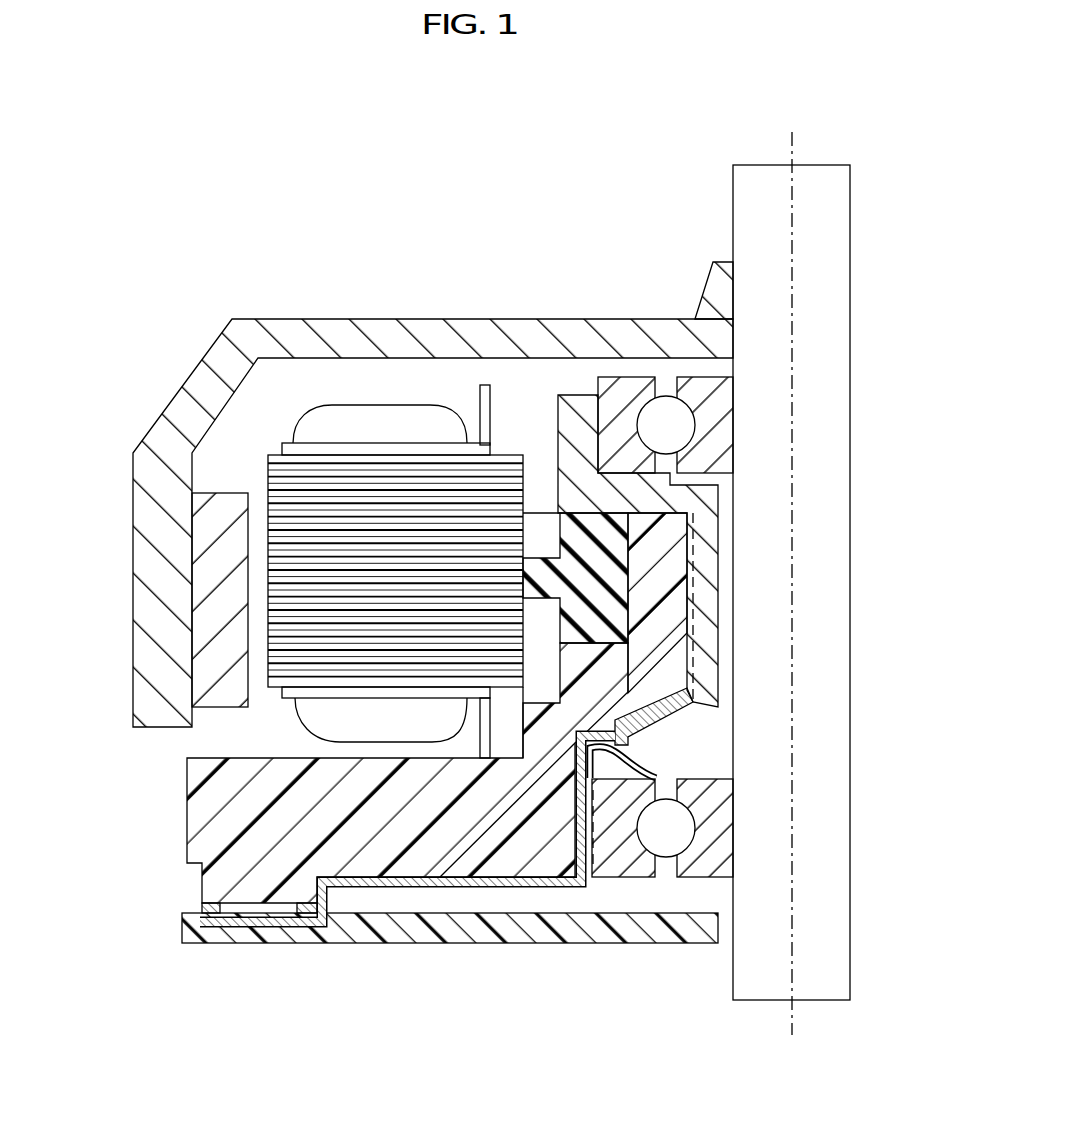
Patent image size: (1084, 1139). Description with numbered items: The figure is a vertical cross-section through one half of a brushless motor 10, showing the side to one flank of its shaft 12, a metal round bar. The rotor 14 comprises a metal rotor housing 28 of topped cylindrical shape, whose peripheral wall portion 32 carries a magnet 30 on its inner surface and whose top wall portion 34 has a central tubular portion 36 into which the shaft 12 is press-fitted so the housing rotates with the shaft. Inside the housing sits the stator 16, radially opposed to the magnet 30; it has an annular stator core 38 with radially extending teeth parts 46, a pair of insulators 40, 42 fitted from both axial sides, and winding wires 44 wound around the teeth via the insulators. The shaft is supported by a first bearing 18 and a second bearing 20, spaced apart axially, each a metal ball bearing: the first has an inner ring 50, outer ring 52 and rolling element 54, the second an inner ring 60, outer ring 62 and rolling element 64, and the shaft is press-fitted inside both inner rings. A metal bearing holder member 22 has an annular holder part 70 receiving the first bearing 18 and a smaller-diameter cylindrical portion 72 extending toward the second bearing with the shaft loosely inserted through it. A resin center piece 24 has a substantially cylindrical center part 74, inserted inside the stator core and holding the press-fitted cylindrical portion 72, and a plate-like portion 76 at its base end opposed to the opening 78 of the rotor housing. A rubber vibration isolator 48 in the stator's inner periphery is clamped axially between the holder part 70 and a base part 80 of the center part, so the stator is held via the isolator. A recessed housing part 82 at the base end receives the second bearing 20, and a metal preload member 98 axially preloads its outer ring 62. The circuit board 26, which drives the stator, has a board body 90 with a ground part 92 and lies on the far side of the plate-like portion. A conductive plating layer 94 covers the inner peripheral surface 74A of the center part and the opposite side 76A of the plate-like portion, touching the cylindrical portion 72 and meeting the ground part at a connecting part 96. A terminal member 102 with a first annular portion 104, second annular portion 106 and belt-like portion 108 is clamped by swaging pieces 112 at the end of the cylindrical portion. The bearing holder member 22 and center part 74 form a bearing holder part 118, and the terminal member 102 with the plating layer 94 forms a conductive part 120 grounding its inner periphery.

The brushless motor 10 is at (538, 157).
The shaft 12 is at (850, 290).
The rotor 14 is at (122, 603).
The stator 16 is at (267, 470).
The first bearing 18 is at (612, 376).
The second bearing 20 is at (727, 878).
The bearing holder member 22 is at (718, 573).
The center piece 24 is at (186, 829).
The circuit board 26 is at (392, 943).
The rotor housing 28 is at (206, 356).
The magnet 30 is at (190, 670).
The peripheral wall portion 32 is at (133, 645).
The top wall portion 34 is at (395, 319).
The tubular portion 36 is at (713, 266).
The stator core 38 is at (232, 550).
The insulator 40 is at (311, 440).
The insulator 42 is at (312, 718).
The winding wire 44 is at (480, 398).
The teeth part 46 is at (400, 505).
The rubber vibration isolator 48 is at (550, 511).
The inner ring 50 is at (705, 377).
The outer ring 52 is at (628, 377).
The rolling element 54 is at (665, 398).
The inner ring 60 is at (695, 880).
The outer ring 62 is at (650, 880).
The rolling element 64 is at (668, 858).
The holder part 70 is at (558, 405).
The cylindrical portion 72 is at (700, 637).
The center part 74 is at (665, 540).
The inner peripheral surface 74A is at (700, 608).
The plate-like portion 76 is at (495, 862).
The opposite side 76A is at (436, 880).
The opening 78 is at (193, 718).
The base part 80 is at (490, 715).
The housing part 82 is at (600, 850).
The board body 90 is at (290, 945).
The ground part 92 is at (250, 930).
The plating layer 94 is at (620, 888).
The connecting part 96 is at (200, 876).
The preload member 98 is at (640, 770).
The terminal member 102 is at (558, 886).
The first annular portion 104 is at (700, 667).
The second annular portion 106 is at (345, 922).
The belt-like portion 108 is at (512, 890).
The swaging piece 112 is at (700, 737).
The bearing holder part 118 is at (902, 528).
The conductive part 120 is at (548, 1052).